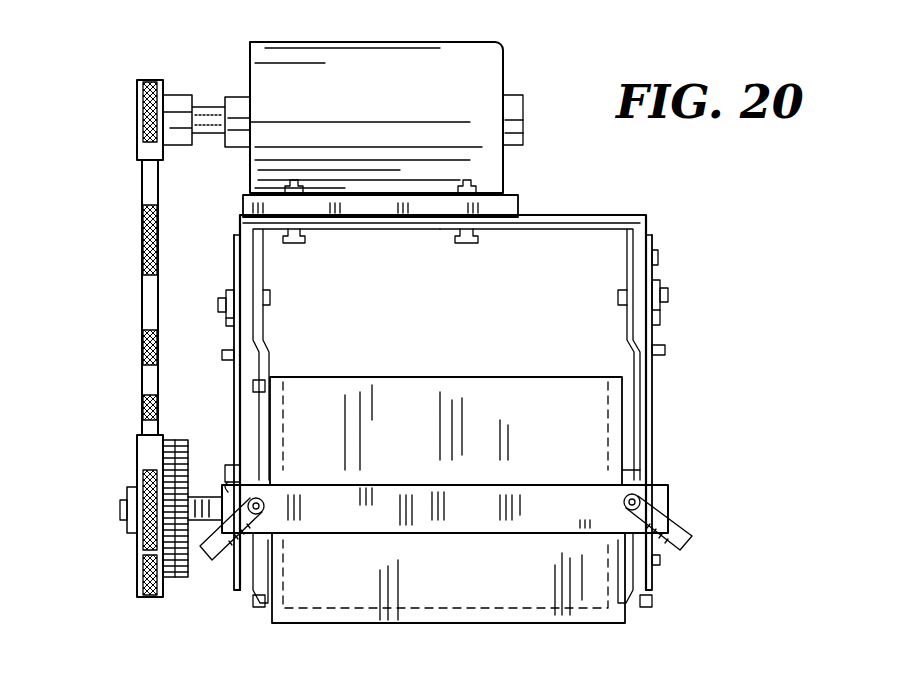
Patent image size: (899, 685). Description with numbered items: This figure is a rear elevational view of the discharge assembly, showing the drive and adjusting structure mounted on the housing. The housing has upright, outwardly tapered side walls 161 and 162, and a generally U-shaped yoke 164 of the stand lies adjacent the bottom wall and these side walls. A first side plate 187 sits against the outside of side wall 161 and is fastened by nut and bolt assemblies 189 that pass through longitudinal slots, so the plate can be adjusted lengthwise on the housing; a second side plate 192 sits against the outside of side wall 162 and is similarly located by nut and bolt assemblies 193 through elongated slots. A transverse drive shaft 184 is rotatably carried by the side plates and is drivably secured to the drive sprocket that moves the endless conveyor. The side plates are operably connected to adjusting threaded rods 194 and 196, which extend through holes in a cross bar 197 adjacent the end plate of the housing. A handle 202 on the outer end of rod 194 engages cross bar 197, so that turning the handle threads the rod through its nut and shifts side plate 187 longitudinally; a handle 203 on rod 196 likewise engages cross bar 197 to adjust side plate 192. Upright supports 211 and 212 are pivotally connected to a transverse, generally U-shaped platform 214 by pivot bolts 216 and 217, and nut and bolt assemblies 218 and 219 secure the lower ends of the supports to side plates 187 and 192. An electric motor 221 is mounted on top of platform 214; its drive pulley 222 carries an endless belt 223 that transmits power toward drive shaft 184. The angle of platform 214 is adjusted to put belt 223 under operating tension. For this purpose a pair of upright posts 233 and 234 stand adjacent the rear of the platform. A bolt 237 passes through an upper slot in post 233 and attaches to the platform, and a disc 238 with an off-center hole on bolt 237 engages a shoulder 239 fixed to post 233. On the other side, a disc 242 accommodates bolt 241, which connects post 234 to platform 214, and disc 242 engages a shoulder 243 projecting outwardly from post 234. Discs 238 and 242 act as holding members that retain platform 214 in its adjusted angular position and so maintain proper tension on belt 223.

The side wall 161 is at (318, 412).
The side wall 162 is at (608, 410).
The yoke 164 is at (460, 606).
The drive shaft 184 is at (127, 508).
The first side plate 187 is at (250, 600).
The nut and bolt assemblies 189 is at (260, 392).
The second side plate 192 is at (630, 468).
The nut and bolt assemblies 193 is at (646, 605).
The threaded rod 194 is at (266, 508).
The threaded rod 196 is at (622, 505).
The cross bar 197 is at (462, 514).
The handle 202 is at (222, 565).
The handle 203 is at (675, 528).
The upright support 211 is at (265, 272).
The upright support 212 is at (625, 264).
The platform 214 is at (568, 215).
The pivot bolt 216 is at (237, 235).
The pivot bolt 217 is at (655, 253).
The nut and bolt assembly 218 is at (240, 482).
The nut and bolt assembly 219 is at (660, 562).
The electric motor 221 is at (418, 42).
The drive pulley 222 is at (140, 100).
The endless belt 223 is at (143, 258).
The upright post 233 is at (236, 410).
The upright post 234 is at (652, 417).
The bolt 237 is at (220, 303).
The disc 238 is at (232, 329).
The shoulder 239 is at (228, 360).
The bolt 241 is at (672, 296).
The disc 242 is at (662, 333).
The shoulder 243 is at (665, 350).